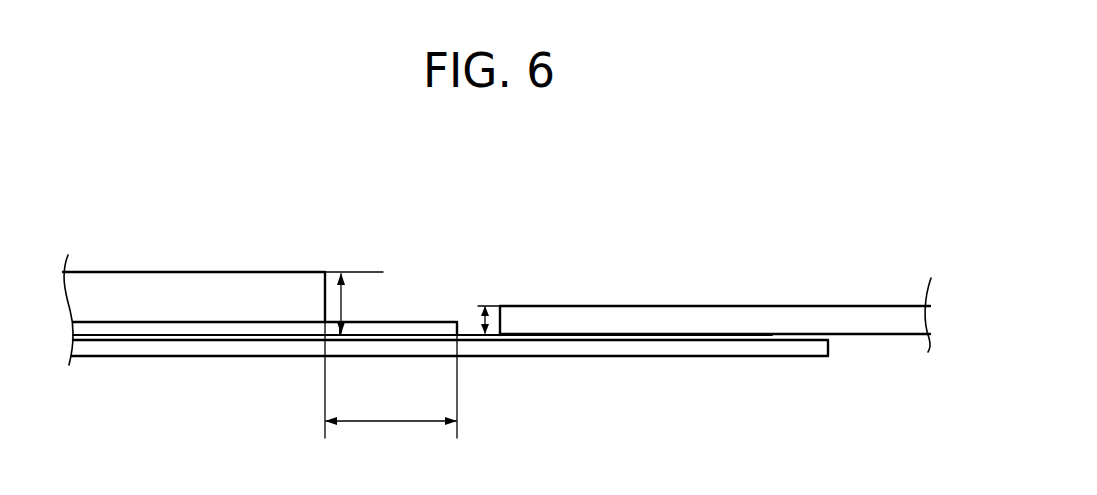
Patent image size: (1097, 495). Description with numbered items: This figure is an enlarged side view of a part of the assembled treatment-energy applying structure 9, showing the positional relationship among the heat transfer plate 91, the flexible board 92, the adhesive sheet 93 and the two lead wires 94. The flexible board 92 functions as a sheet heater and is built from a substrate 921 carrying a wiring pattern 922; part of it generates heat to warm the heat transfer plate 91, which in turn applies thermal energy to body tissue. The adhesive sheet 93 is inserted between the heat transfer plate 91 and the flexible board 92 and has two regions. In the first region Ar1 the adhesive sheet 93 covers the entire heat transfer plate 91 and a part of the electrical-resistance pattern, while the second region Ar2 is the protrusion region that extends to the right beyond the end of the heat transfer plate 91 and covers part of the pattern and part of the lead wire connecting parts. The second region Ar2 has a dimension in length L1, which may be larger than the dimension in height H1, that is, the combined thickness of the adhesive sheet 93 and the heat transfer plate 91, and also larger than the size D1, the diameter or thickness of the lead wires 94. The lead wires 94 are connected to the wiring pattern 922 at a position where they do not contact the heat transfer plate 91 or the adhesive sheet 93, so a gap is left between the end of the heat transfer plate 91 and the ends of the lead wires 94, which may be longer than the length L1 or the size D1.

The treatment-energy applying structure 9 is at (162, 210).
The heat transfer plate 91 is at (232, 272).
The flexible board 92 is at (450, 394).
The substrate 921 is at (146, 346).
The wiring pattern 922 is at (120, 405).
The adhesive sheet 93 is at (358, 335).
The lead wires 94 is at (706, 306).
The first region Ar1 is at (246, 316).
The second region Ar2 is at (419, 317).
The dimension in height H1 is at (342, 300).
The dimension in length L1 is at (391, 391).
The size of the lead wire D1 is at (500, 320).